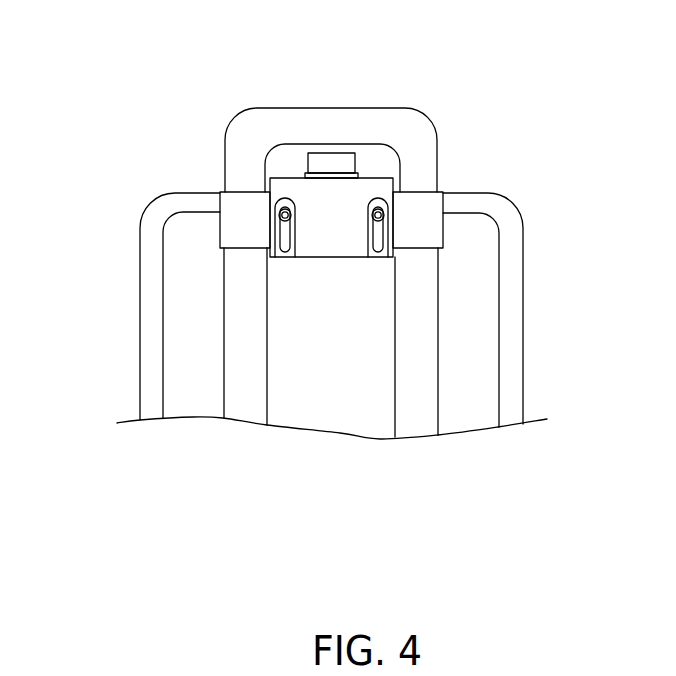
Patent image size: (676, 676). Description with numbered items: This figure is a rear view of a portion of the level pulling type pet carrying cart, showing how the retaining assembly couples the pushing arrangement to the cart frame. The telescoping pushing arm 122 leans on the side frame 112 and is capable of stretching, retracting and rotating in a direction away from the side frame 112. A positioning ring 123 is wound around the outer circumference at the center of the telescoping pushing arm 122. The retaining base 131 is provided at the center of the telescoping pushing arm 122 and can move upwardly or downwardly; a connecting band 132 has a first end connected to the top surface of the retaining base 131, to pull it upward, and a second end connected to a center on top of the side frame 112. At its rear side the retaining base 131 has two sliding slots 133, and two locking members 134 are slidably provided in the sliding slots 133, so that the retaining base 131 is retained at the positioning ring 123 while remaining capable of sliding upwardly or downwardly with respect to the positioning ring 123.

The side frame 112 is at (152, 285).
The telescoping pushing arm 122 is at (342, 130).
The positioning ring 123 is at (428, 207).
The retaining base 131 is at (297, 190).
The connecting band 132 is at (327, 163).
The sliding slots 133 is at (280, 217).
The locking members 134 is at (285, 232).